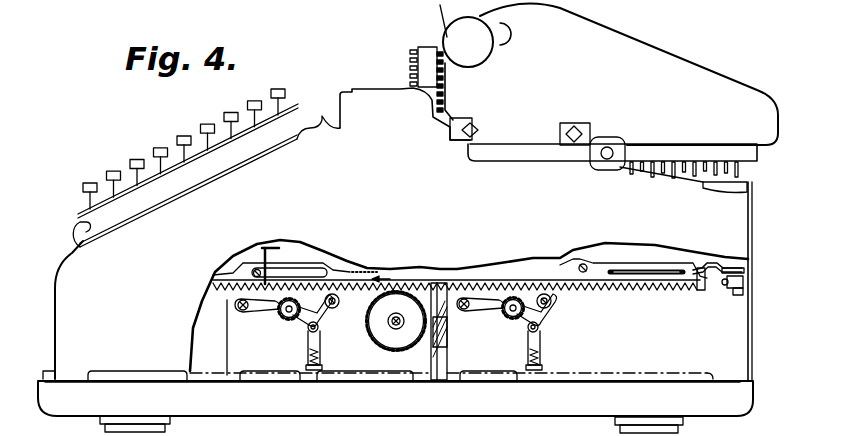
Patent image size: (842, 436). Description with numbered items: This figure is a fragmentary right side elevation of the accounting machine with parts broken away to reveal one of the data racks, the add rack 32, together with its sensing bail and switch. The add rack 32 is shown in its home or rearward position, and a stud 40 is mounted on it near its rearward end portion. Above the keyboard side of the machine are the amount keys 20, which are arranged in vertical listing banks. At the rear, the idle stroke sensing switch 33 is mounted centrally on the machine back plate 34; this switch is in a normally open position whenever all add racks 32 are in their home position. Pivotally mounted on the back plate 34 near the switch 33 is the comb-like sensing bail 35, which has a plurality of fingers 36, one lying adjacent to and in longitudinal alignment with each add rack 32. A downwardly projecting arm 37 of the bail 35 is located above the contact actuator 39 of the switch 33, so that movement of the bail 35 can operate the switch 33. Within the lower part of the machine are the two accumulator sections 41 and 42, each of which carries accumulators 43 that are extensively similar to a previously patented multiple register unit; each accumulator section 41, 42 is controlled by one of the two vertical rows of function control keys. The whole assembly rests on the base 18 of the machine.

The base 18 is at (549, 414).
The amount keys 20 is at (82, 197).
The add rack 32 is at (570, 289).
The idle stroke sensing switch 33 is at (738, 296).
The machine back plate 34 is at (753, 337).
The sensing bail 35 is at (703, 262).
The fingers 36 is at (662, 280).
The downwardly projecting arm 37 is at (736, 275).
The contact actuator 39 is at (740, 271).
The stud 40 is at (697, 284).
The accumulator section 41 is at (277, 372).
The accumulator section 42 is at (497, 364).
The accumulators 43 is at (271, 308).